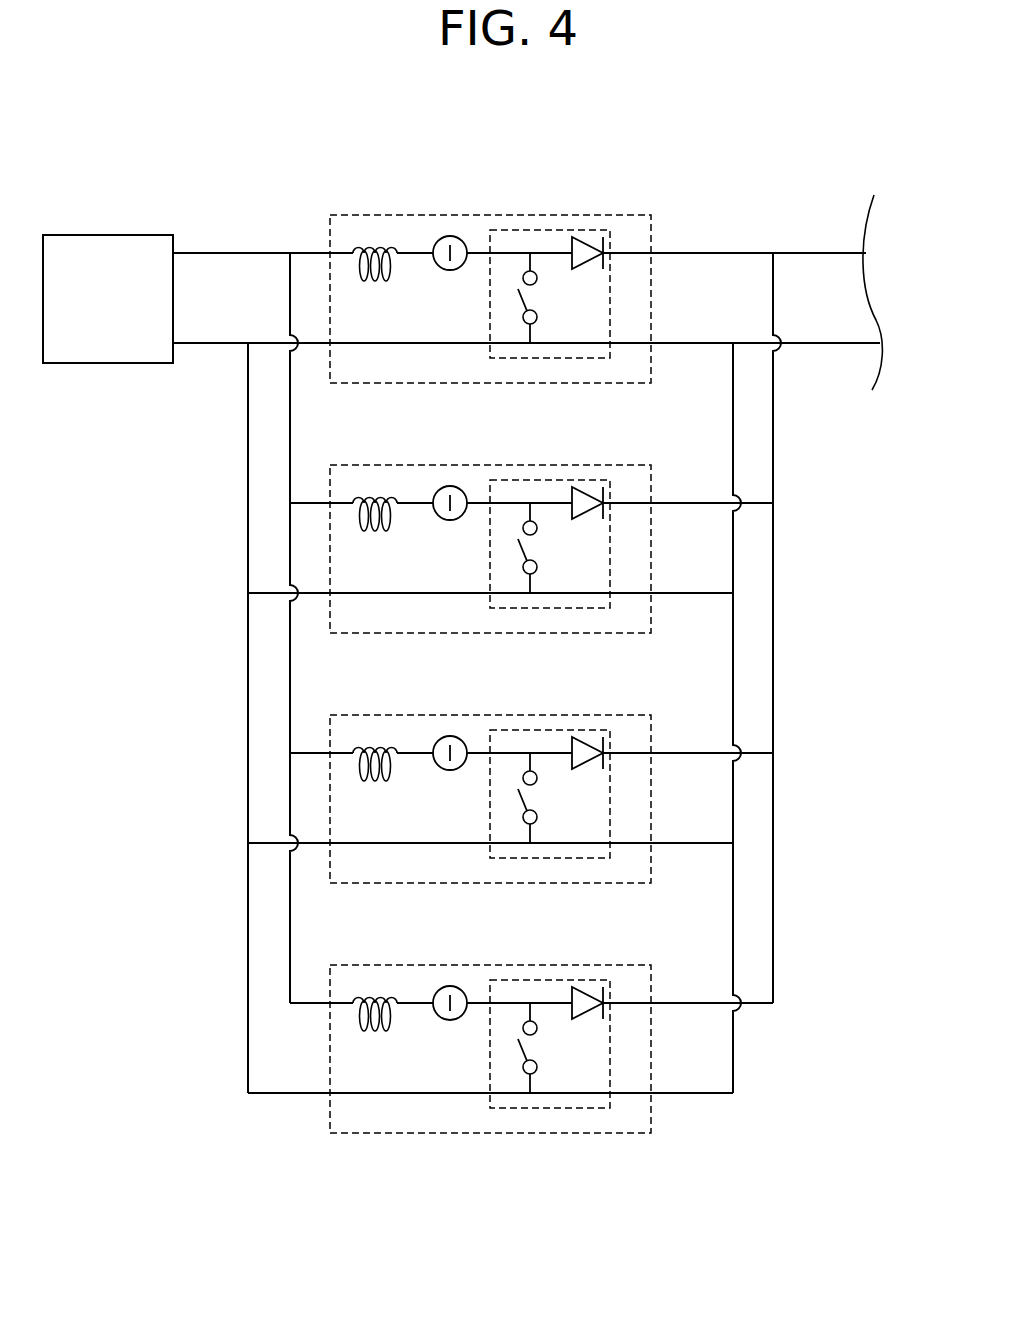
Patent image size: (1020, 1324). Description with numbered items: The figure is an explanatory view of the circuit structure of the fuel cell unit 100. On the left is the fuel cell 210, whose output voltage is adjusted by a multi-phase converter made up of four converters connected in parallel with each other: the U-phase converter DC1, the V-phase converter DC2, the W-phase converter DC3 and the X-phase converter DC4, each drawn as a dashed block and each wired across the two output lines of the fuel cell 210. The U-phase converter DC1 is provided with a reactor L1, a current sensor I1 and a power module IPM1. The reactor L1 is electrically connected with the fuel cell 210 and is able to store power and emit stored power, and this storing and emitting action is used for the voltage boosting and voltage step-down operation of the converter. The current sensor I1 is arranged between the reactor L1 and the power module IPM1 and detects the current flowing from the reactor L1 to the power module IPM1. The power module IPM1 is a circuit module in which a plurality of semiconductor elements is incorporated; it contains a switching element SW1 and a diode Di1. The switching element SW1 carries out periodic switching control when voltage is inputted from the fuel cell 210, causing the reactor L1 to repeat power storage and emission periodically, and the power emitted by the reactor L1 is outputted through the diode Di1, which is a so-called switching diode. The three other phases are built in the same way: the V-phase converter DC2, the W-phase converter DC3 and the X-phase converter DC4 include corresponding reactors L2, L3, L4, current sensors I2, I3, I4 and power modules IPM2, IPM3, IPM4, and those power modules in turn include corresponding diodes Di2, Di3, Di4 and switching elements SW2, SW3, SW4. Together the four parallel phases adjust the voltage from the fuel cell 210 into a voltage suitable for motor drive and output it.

The fuel cell unit 100 is at (148, 168).
The fuel cell 210 is at (108, 234).
The reactor L1 is at (373, 242).
The reactor L2 is at (375, 471).
The reactor L3 is at (375, 721).
The reactor L4 is at (375, 971).
The current sensor I1 is at (451, 236).
The current sensor I2 is at (450, 466).
The current sensor I3 is at (450, 716).
The current sensor I4 is at (450, 966).
The diode Di1 is at (598, 236).
The diode Di2 is at (587, 467).
The diode Di3 is at (587, 717).
The diode Di4 is at (587, 967).
The power module IPM1 is at (614, 246).
The power module IPM2 is at (596, 513).
The power module IPM3 is at (596, 763).
The power module IPM4 is at (596, 1013).
The U-phase converter DC1 is at (656, 231).
The V-phase converter DC2 is at (529, 541).
The W-phase converter DC3 is at (529, 791).
The X-phase converter DC4 is at (529, 1041).
The switching element SW1 is at (521, 294).
The switching element SW2 is at (477, 548).
The switching element SW3 is at (477, 798).
The switching element SW4 is at (477, 1048).